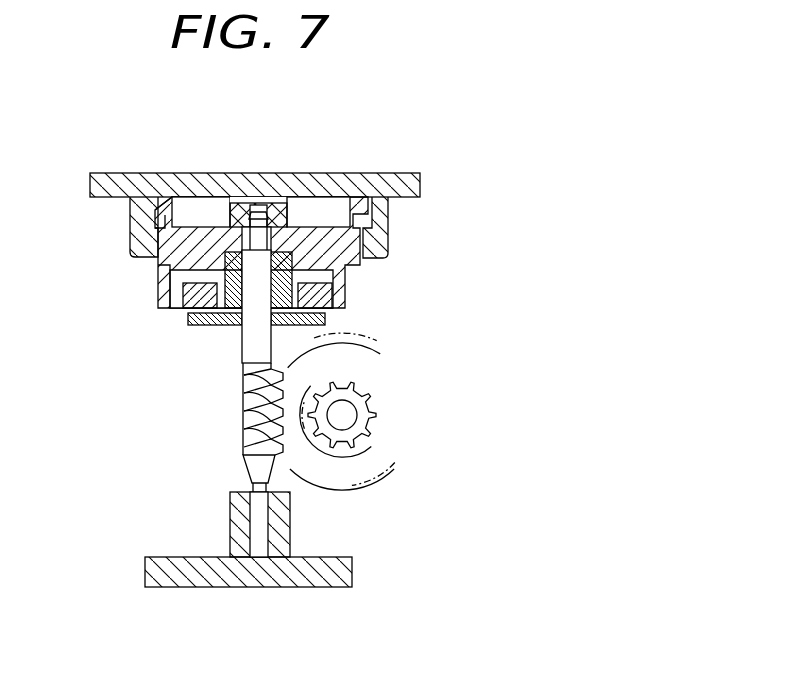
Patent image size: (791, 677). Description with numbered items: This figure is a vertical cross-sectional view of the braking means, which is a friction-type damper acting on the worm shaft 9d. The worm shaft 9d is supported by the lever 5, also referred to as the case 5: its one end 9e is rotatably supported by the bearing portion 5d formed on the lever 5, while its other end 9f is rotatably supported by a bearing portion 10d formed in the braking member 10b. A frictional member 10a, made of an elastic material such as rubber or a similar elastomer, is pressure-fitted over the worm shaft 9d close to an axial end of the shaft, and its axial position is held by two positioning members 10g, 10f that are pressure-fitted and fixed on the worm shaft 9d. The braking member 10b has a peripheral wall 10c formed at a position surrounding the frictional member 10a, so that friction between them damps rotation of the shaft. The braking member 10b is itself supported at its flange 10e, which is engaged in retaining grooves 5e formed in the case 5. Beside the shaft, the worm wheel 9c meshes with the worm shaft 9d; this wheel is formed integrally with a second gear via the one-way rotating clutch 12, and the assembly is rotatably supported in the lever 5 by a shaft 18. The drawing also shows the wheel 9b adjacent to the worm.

The lever 5 is at (400, 188).
The retaining grooves 5e is at (130, 237).
The bearing portion 5d is at (240, 526).
The braking member 10b is at (196, 232).
The flange 10e is at (143, 200).
The positioning member 10f is at (300, 225).
The bearing portion 10d is at (252, 205).
The peripheral wall 10c is at (160, 302).
The frictional member 10a is at (186, 307).
The positioning member 10g is at (213, 325).
The another end of worm shaft 9f is at (277, 215).
The worm shaft 9d is at (252, 360).
The one end of worm shaft 9e is at (250, 485).
The shaft 18 is at (360, 412).
The worm wheel 9b is at (372, 443).
The worm wheel 9c is at (345, 343).
The one-way rotating clutch 12 is at (343, 473).